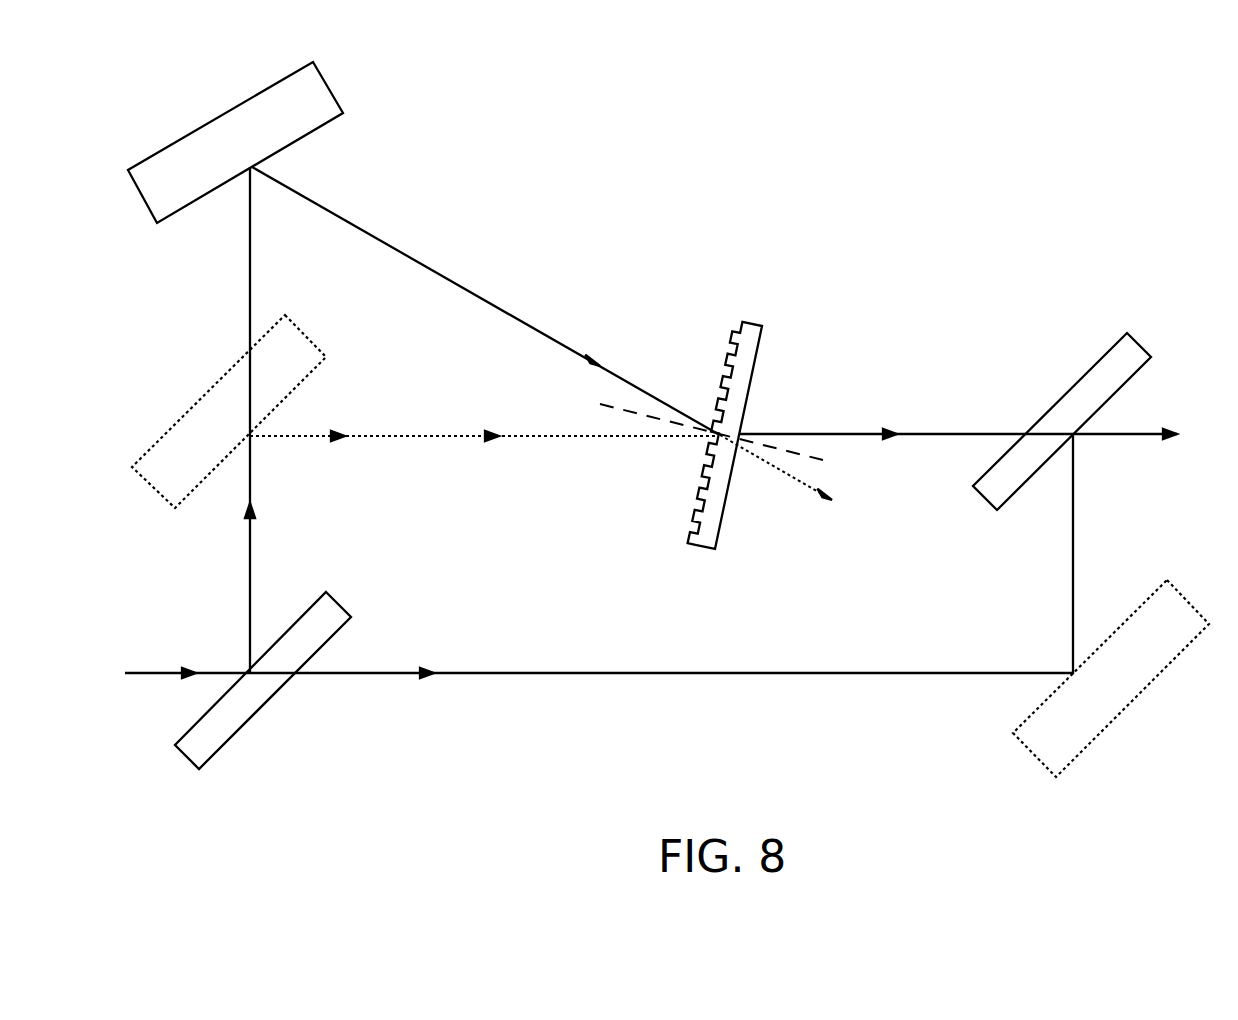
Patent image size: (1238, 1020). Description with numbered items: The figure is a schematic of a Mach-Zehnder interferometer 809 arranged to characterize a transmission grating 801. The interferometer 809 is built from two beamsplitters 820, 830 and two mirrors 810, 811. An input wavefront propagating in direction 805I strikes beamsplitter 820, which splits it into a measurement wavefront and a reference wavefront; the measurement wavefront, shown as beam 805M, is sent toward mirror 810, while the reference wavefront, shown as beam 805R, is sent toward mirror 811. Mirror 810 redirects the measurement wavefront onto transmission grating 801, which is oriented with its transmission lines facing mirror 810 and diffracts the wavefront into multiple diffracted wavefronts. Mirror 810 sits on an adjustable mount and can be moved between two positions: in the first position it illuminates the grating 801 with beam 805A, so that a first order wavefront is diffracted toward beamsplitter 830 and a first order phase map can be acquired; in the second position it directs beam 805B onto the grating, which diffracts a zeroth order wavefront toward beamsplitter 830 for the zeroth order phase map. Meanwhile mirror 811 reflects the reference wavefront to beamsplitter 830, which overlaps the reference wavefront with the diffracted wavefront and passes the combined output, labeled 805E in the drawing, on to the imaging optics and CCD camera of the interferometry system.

The mirror 810 is at (325, 103).
The beamsplitter 820 is at (197, 758).
The beamsplitter 830 is at (1137, 340).
The mirror 811 is at (1163, 582).
The transmission grating 801 is at (752, 322).
The input wavefront propagation direction 805I is at (205, 670).
The measurement wavefront beam 805M is at (253, 578).
The beam 805A is at (458, 248).
The beam 805B is at (470, 437).
The reference wavefront beam 805R is at (788, 672).
The output beam 805E is at (1112, 438).
The Mach-Zehnder interferometer 809 is at (603, 757).